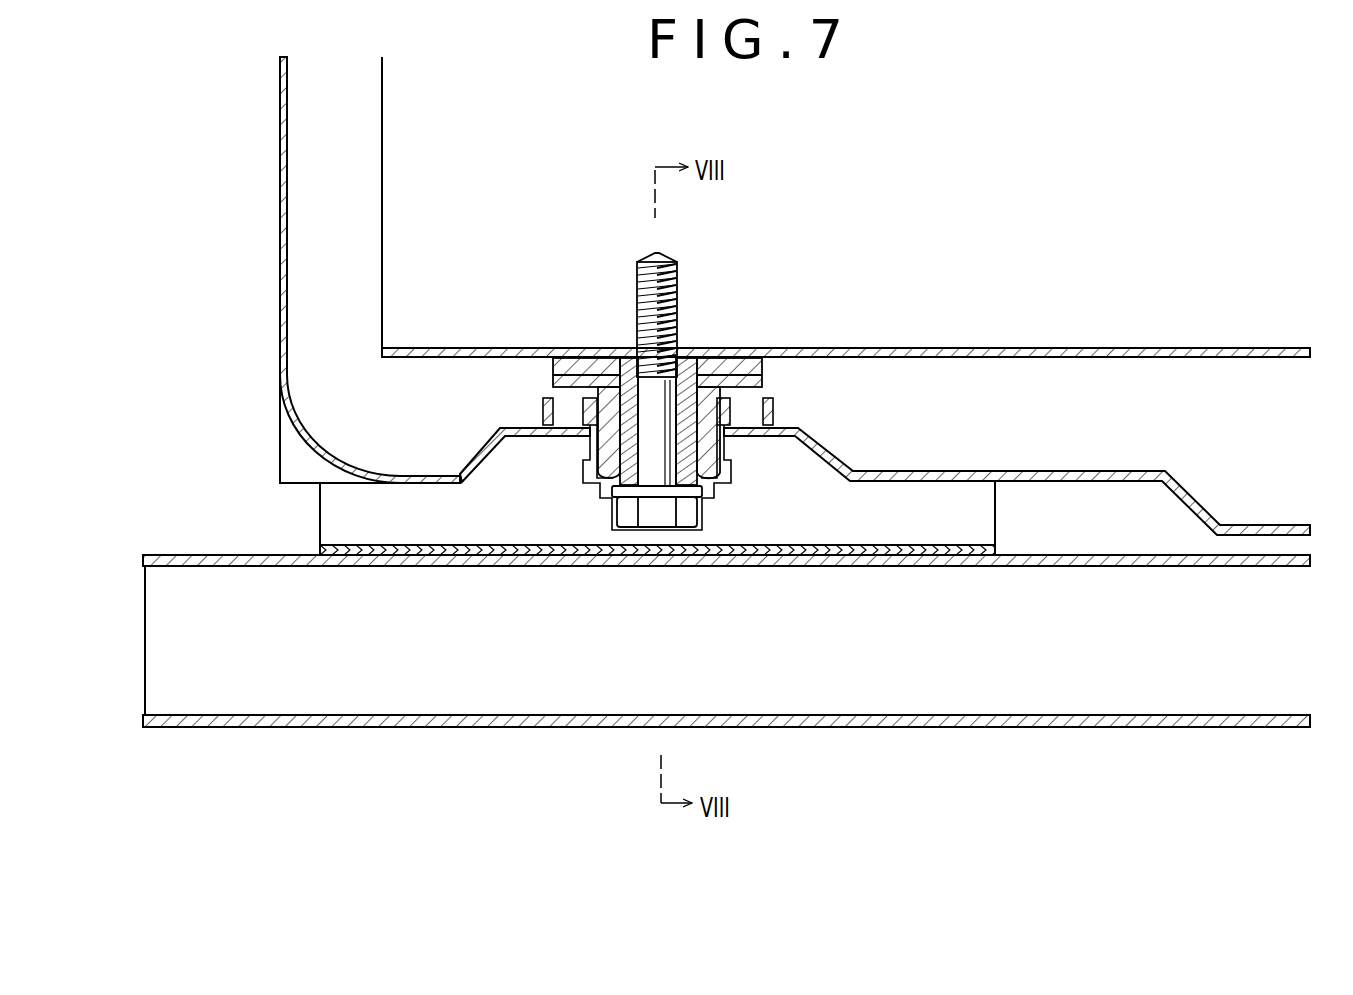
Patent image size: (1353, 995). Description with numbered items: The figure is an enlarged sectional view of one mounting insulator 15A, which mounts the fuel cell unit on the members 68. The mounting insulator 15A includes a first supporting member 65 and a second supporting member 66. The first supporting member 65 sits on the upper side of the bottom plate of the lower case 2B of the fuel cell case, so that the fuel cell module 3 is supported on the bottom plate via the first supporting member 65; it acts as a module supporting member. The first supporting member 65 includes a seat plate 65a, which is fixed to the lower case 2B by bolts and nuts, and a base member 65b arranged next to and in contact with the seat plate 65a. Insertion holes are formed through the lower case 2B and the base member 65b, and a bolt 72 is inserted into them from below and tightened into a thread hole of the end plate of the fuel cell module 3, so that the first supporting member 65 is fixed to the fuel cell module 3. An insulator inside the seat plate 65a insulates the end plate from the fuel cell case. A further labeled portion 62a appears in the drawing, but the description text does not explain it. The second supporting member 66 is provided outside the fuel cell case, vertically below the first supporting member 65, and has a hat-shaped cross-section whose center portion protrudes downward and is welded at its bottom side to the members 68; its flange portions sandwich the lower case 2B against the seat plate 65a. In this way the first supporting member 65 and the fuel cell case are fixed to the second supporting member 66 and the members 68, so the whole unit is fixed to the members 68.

The lower case 2B is at (278, 297).
The fuel cell module 3 is at (407, 175).
The mounting insulator 15A is at (797, 325).
The cylindrical portion of bracket 62a is at (590, 445).
The first supporting member 65 is at (677, 396).
The seat plate 65a is at (727, 447).
The base member 65b is at (720, 345).
The second supporting member 66 is at (390, 515).
The members 68 is at (862, 727).
The bolt 72 is at (650, 252).